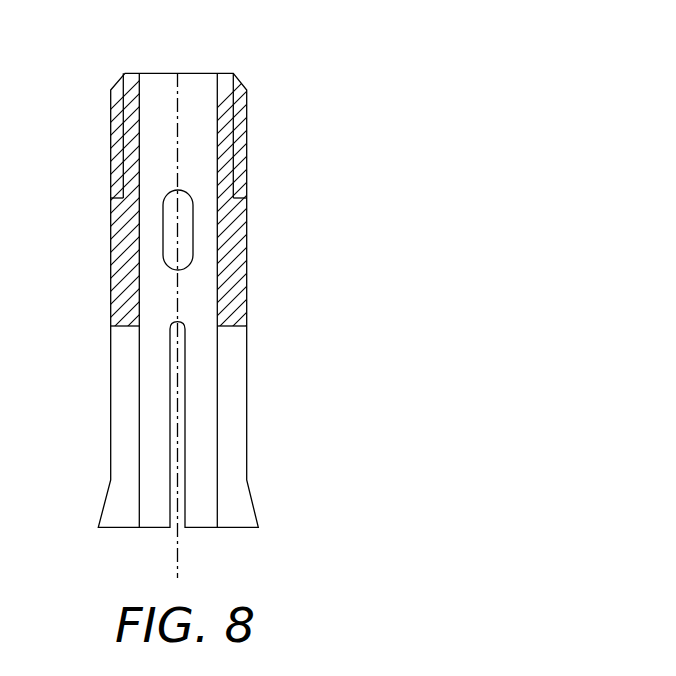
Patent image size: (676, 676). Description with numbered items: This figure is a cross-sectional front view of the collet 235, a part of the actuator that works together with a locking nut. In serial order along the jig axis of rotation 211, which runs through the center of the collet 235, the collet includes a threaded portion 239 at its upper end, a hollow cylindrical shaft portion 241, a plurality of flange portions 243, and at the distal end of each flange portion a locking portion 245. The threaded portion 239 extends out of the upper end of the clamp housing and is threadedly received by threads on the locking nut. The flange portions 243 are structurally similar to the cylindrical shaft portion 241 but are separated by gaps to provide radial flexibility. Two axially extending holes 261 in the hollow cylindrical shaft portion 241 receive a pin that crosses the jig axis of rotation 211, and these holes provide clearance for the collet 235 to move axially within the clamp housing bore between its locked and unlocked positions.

The collet 235 is at (298, 82).
The threaded portion 239 is at (232, 138).
The axially extending holes 261 is at (193, 220).
The hollow cylindrical shaft portion 241 is at (238, 278).
The flange portions 243 is at (238, 393).
The locking portion 245 is at (243, 505).
The jig axis of rotation 211 is at (176, 552).